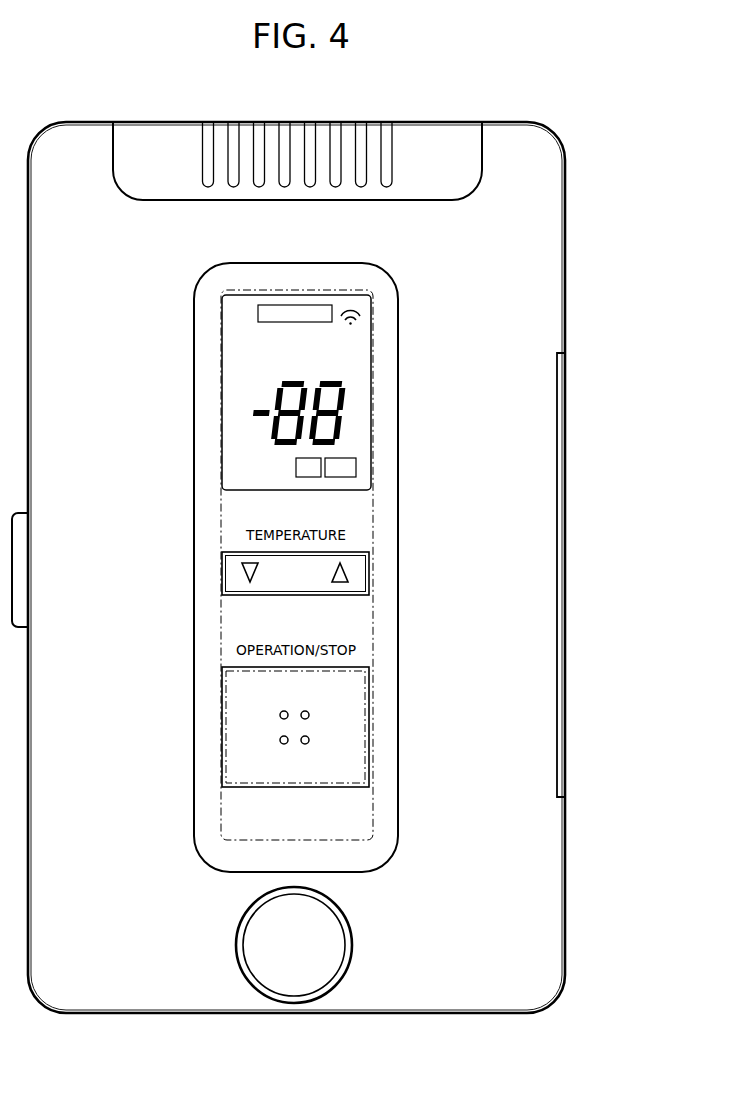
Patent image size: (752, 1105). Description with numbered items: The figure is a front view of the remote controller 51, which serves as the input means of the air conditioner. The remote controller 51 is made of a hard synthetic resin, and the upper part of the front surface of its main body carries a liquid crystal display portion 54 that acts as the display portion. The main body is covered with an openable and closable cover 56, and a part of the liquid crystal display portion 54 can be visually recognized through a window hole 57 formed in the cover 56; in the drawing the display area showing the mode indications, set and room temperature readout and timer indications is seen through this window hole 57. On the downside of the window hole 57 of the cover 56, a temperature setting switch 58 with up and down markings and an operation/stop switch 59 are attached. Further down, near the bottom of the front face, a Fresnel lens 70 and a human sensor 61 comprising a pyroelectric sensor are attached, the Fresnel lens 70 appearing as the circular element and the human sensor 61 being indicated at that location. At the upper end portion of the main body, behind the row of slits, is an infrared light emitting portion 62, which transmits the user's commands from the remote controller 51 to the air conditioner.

The remote controller 51 is at (584, 185).
The liquid crystal display portion 54 is at (360, 413).
The cover 56 is at (537, 597).
The window hole 57 is at (221, 333).
The temperature setting switch 58 is at (360, 573).
The operation/stop switch 59 is at (345, 738).
The human sensor 61 is at (285, 945).
The infrared light emitting portion 62 is at (348, 122).
The Fresnel lens 70 is at (330, 948).